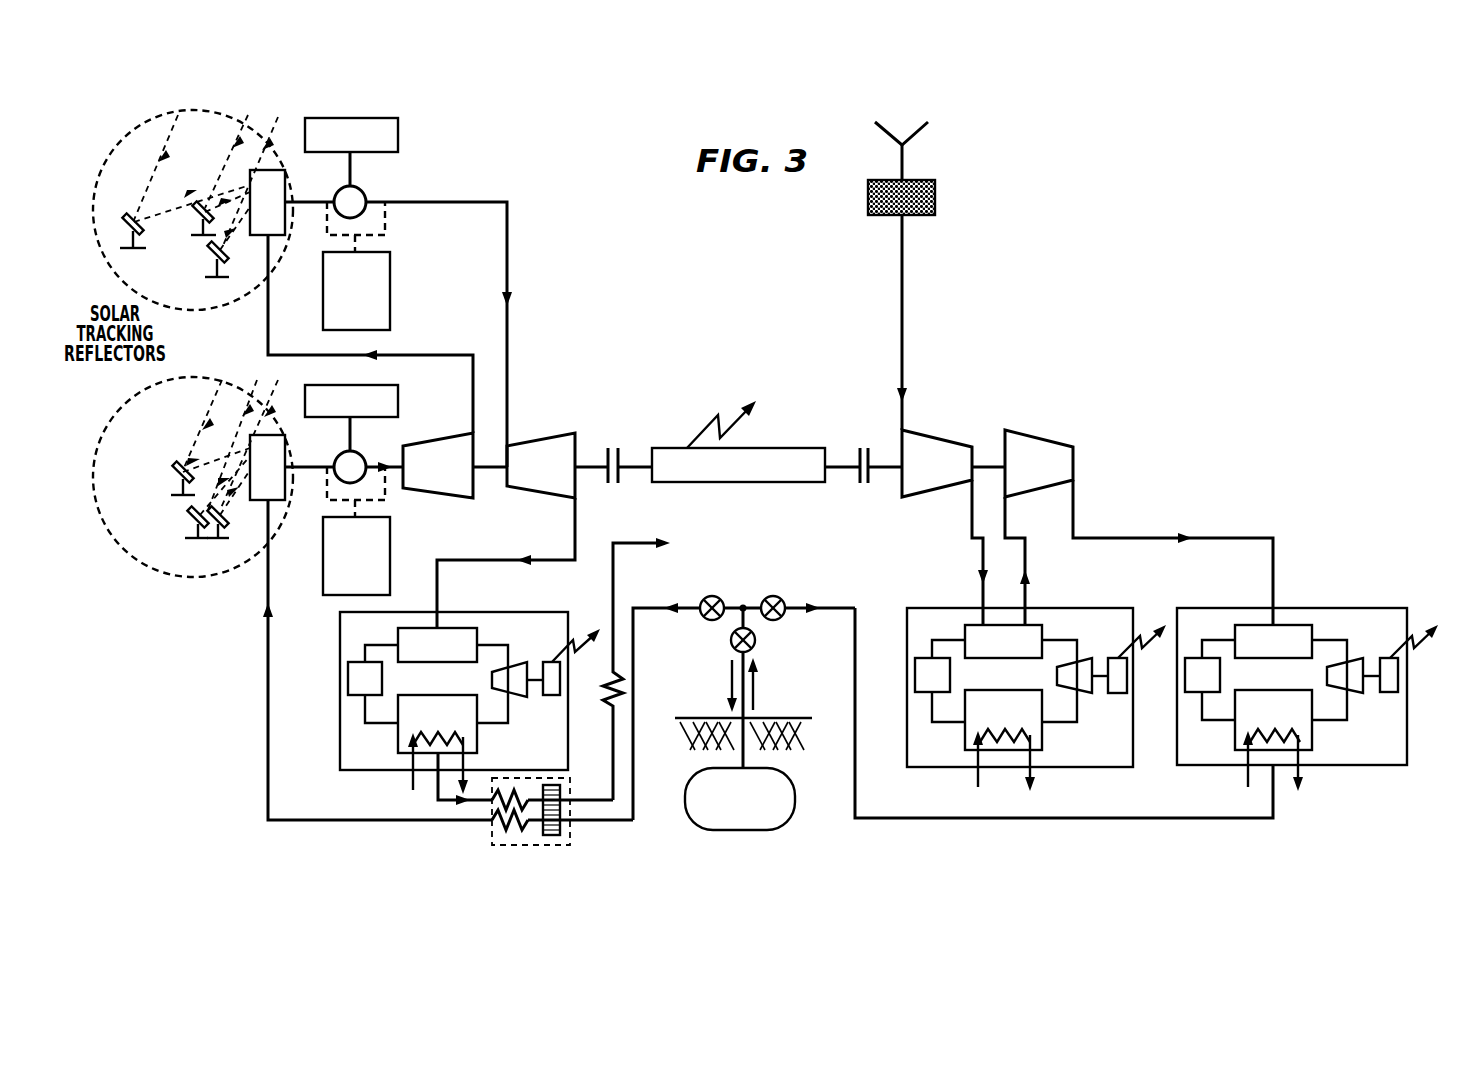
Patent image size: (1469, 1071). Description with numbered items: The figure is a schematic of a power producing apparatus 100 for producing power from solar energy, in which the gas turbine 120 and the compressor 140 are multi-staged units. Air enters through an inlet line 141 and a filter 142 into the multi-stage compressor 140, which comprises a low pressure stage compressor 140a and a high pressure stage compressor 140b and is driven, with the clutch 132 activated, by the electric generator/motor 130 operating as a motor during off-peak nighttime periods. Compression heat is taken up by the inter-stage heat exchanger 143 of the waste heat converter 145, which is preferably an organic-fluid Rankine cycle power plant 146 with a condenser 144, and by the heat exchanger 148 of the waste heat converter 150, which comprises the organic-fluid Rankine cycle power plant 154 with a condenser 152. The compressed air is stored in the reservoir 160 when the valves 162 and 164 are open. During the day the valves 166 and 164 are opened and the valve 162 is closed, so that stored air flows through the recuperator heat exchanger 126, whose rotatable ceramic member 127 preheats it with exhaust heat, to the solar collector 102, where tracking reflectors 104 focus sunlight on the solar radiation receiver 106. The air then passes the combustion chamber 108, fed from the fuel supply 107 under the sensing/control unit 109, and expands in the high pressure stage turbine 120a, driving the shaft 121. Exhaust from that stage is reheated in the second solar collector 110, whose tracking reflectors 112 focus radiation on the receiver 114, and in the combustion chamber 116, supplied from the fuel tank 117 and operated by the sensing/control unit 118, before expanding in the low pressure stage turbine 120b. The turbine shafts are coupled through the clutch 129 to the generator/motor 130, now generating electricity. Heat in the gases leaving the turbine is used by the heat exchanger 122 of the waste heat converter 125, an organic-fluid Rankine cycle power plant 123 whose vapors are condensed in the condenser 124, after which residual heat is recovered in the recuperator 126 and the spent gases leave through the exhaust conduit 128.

The power producing apparatus 100 is at (1164, 294).
The solar collector 102 is at (146, 424).
The tracking reflectors 104 is at (176, 486).
The solar radiation receiver 106 is at (250, 440).
The fuel supply 107 is at (398, 397).
The combustion chamber 108 is at (345, 452).
The sensing/control unit 109 is at (323, 538).
The second solar collector 110 is at (137, 142).
The tracking reflectors 112 is at (131, 252).
The solar radiation receiver 114 is at (250, 182).
The combustion chamber 116 is at (368, 196).
The fuel tank 117 is at (360, 118).
The sensing/control unit 118 is at (391, 300).
The multi-stage gas turbine 120 is at (491, 432).
The high pressure stage turbine 120a is at (455, 498).
The low pressure stage turbine 120b is at (546, 498).
The shaft 121 is at (490, 470).
The heat exchanger 122 is at (452, 628).
The organic-fluid Rankine cycle power plant 123 is at (377, 713).
The condenser 124 is at (435, 745).
The waste heat converter 125 is at (515, 628).
The recuperator heat exchanger 126 is at (500, 847).
The rotatable ceramic member 127 is at (595, 456).
The exhaust conduit 128 is at (612, 702).
The clutch 129 is at (620, 456).
The electric generator/motor 130 is at (795, 448).
The clutch 132 is at (868, 456).
The multi-stage compressor 140 is at (986, 430).
The low pressure stage compressor 140a is at (940, 437).
The high pressure stage compressor 140b is at (1060, 440).
The air inlet line 141 is at (902, 280).
The filter 142 is at (935, 197).
The inter-stage heat exchanger 143 is at (1030, 625).
The condenser 144 is at (975, 733).
The waste heat converter 145 is at (1118, 628).
The organic-fluid Rankine cycle power plant 146 is at (948, 707).
The heat exchanger 148 is at (1303, 632).
The waste heat converter 150 is at (1375, 625).
The condenser 152 is at (1243, 732).
The organic-fluid Rankine cycle power plant 154 is at (1212, 705).
The reservoir 160 is at (746, 831).
The valve 162 is at (783, 598).
The valve 164 is at (755, 646).
The valve 166 is at (706, 620).